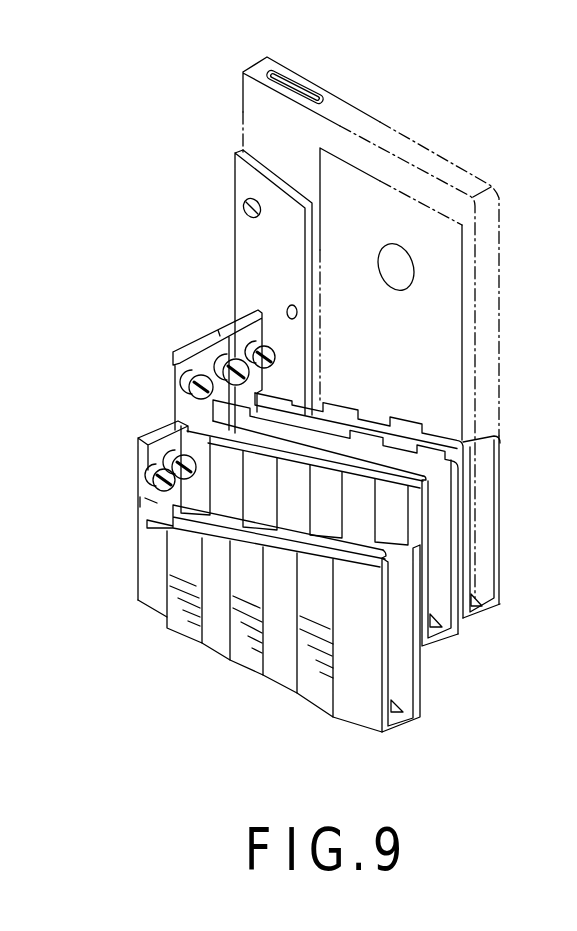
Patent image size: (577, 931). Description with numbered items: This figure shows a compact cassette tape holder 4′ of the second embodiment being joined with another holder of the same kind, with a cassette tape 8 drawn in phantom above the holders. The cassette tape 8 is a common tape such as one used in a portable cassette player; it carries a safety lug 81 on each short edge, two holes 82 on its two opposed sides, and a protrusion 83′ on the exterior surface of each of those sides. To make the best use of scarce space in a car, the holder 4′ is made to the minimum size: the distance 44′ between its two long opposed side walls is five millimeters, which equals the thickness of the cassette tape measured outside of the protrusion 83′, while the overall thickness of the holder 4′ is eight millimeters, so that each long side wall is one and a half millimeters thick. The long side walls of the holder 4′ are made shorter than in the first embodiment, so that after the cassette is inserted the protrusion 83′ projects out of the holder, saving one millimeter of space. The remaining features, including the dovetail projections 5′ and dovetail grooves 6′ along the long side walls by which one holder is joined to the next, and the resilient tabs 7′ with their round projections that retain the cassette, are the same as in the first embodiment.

The cassette tape 8 is at (500, 330).
The safety lug 81 is at (303, 86).
The holes 82 is at (246, 214).
The protrusion 83′ is at (241, 153).
The screw 7′ is at (185, 375).
The contact tab 5′ is at (191, 630).
The contact tab 6′ is at (285, 673).
The distance between the two long opposed side walls 44′ is at (408, 682).
The holder 4′ is at (313, 592).